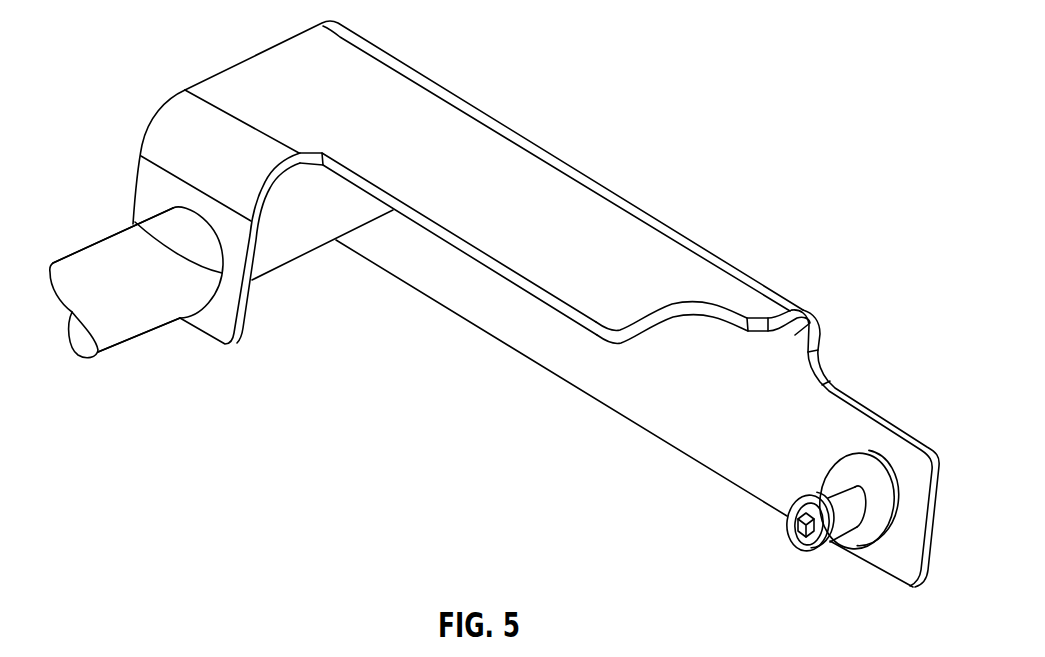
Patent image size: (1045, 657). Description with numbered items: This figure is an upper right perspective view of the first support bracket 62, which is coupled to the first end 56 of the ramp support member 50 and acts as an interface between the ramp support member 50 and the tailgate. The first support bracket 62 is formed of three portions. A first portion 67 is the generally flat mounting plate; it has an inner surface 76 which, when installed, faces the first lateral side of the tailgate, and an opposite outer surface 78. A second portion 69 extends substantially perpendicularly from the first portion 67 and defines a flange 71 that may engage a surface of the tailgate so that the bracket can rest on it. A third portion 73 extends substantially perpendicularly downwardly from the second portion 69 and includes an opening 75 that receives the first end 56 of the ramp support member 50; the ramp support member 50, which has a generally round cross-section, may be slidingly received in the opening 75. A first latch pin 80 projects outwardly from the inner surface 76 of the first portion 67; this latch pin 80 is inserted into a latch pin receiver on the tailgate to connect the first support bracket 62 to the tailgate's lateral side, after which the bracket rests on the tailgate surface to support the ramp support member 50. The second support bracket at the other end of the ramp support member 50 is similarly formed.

The ramp support member 50 is at (85, 366).
The first end 56 is at (77, 261).
The first support bracket 62 is at (586, 402).
The first portion 67 is at (723, 425).
The second portion 69 is at (545, 193).
The flange 71 is at (647, 328).
The third portion 73 is at (224, 318).
The opening 75 is at (133, 221).
The inner surface 76 is at (778, 485).
The outer surface 78 is at (886, 415).
The first latch pin 80 is at (842, 510).